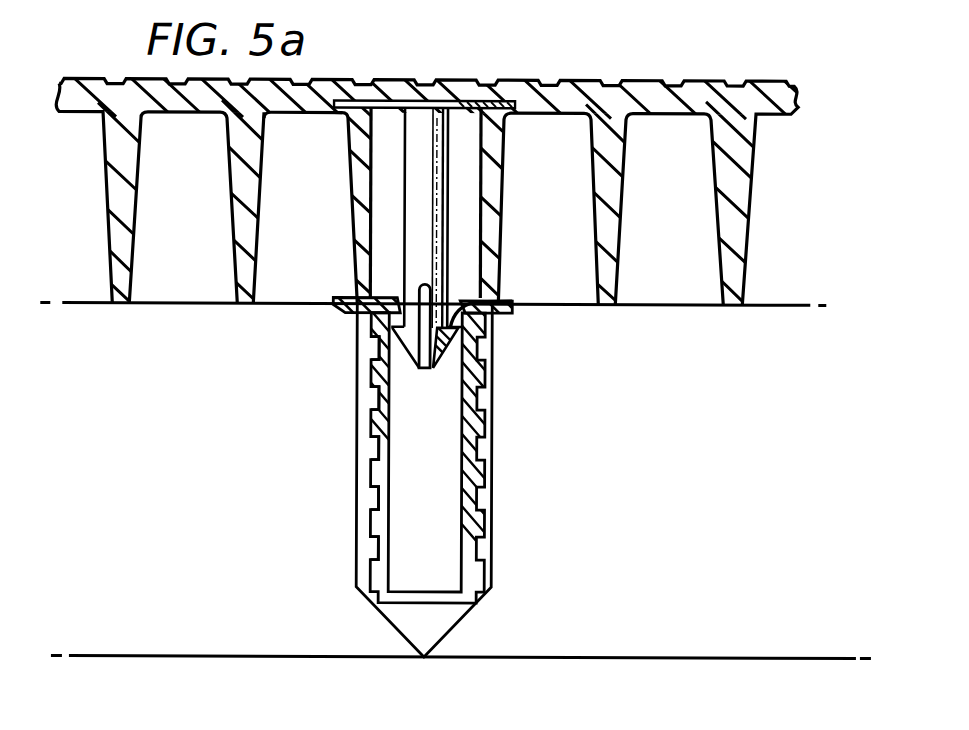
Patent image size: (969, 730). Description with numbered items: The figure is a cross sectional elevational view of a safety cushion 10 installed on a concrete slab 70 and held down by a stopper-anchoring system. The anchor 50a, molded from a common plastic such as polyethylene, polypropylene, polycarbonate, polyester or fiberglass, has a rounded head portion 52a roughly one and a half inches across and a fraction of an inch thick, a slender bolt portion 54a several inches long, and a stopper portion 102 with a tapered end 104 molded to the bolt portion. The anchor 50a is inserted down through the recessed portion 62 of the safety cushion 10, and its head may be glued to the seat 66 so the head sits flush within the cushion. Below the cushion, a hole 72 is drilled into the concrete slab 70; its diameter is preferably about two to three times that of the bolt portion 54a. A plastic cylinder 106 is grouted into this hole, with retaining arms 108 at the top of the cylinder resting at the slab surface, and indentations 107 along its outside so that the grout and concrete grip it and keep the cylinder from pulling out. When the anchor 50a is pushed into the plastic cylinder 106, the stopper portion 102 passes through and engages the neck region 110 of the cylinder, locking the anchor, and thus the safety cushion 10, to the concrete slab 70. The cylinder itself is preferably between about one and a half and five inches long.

The safety cushion 10 is at (692, 85).
The anchor 50a is at (436, 157).
The rounded head portion 52a is at (508, 107).
The bolt portion 54a is at (400, 193).
The recessed portion 62 is at (493, 112).
The seat 66 is at (368, 112).
The concrete slab 70 is at (691, 468).
The hole 72 is at (342, 355).
The stopper portion 102 is at (498, 306).
The tapered end 104 is at (410, 347).
The plastic cylinder 106 is at (482, 480).
The indentations 107 is at (344, 420).
The retaining arms 108 is at (334, 299).
The neck region 110 is at (494, 345).